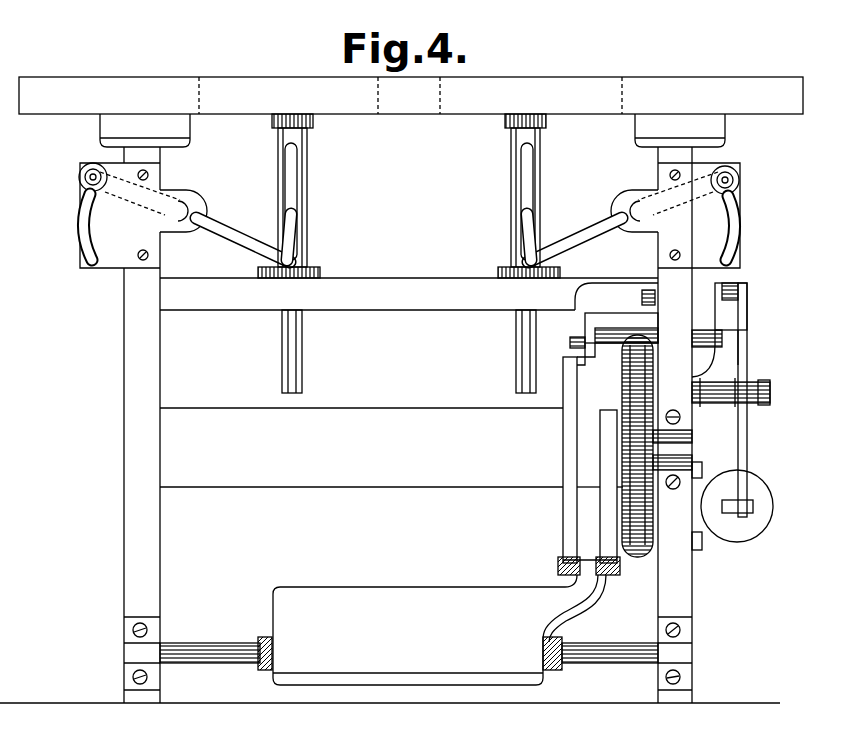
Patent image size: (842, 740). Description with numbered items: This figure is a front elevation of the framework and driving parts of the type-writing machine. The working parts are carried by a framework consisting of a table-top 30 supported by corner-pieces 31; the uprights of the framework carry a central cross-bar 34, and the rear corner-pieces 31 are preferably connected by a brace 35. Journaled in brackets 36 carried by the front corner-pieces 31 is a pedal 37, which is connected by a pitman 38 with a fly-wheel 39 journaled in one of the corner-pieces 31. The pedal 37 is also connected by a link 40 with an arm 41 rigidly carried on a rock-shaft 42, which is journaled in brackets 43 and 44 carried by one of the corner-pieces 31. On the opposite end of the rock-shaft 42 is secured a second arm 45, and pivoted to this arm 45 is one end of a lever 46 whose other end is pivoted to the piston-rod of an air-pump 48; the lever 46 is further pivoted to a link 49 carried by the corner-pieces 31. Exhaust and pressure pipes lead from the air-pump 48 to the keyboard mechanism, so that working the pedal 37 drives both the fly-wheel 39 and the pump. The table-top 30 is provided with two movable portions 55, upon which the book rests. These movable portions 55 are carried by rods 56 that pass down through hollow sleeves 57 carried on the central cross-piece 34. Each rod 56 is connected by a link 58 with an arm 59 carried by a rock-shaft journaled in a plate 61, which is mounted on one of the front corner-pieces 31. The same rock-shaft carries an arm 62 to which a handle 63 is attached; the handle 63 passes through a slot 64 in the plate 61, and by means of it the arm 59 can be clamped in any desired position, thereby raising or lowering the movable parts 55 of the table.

The table-top 30 is at (411, 95).
The corner-pieces 31 is at (408, 425).
The central cross-bar 34 is at (409, 294).
The brace 35 is at (391, 447).
The brackets 36 is at (131, 632).
The pedal 37 is at (439, 630).
The pitman 38 is at (607, 508).
The fly-wheel 39 is at (636, 552).
The link 40 is at (566, 450).
The arm 41 is at (582, 348).
The rock-shaft 42 is at (612, 345).
The bracket 43 is at (624, 298).
The bracket 44 is at (735, 340).
The second arm 45 is at (733, 304).
The lever 46 is at (748, 440).
The air-pump 48 is at (760, 492).
The link 49 is at (750, 380).
The movable portions 55 is at (273, 84).
The rods 56 is at (303, 362).
The hollow sleeves 57 is at (308, 181).
The link 58 is at (285, 220).
The arm 59 is at (214, 240).
The plate 61 is at (410, 215).
The arm 62 is at (179, 200).
The handle 63 is at (82, 176).
The slot 64 is at (82, 214).